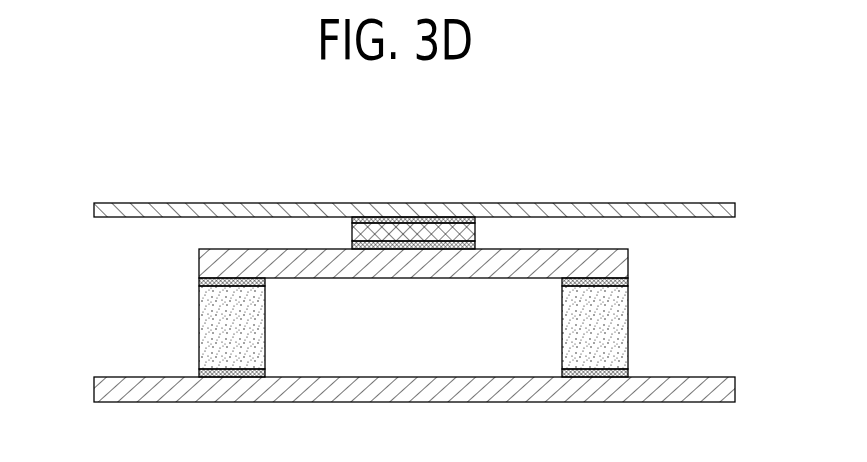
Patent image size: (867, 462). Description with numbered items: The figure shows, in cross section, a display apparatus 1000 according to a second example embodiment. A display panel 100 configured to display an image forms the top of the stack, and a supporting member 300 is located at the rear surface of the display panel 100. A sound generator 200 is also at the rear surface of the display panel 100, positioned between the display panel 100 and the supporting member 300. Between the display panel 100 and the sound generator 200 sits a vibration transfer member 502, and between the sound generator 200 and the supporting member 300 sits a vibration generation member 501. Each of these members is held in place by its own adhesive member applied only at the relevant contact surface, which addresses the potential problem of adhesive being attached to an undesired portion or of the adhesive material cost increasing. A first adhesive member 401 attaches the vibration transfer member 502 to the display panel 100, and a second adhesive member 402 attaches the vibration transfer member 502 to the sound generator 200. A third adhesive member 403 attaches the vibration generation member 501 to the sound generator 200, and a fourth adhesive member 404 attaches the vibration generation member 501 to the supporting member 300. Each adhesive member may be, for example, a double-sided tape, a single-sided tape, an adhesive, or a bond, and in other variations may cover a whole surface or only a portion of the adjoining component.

The display apparatus 1000 is at (90, 158).
The display panel 100 is at (727, 208).
The sound generator 200 is at (613, 271).
The supporting member 300 is at (724, 387).
The first adhesive member 401 is at (375, 219).
The second adhesive member 402 is at (468, 220).
The third adhesive member 403 is at (628, 284).
The fourth adhesive member 404 is at (628, 371).
The vibration generation member 501 is at (614, 331).
The vibration transfer member 502 is at (408, 221).